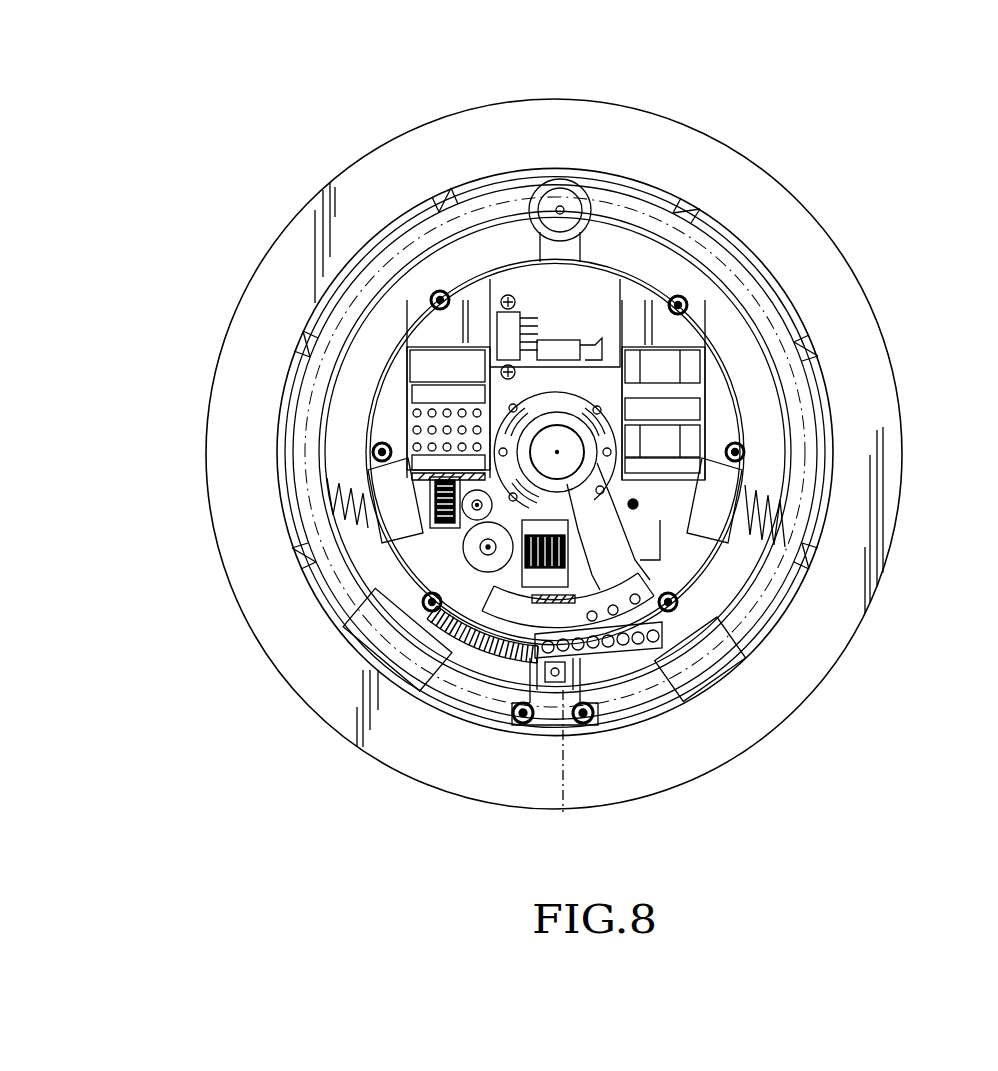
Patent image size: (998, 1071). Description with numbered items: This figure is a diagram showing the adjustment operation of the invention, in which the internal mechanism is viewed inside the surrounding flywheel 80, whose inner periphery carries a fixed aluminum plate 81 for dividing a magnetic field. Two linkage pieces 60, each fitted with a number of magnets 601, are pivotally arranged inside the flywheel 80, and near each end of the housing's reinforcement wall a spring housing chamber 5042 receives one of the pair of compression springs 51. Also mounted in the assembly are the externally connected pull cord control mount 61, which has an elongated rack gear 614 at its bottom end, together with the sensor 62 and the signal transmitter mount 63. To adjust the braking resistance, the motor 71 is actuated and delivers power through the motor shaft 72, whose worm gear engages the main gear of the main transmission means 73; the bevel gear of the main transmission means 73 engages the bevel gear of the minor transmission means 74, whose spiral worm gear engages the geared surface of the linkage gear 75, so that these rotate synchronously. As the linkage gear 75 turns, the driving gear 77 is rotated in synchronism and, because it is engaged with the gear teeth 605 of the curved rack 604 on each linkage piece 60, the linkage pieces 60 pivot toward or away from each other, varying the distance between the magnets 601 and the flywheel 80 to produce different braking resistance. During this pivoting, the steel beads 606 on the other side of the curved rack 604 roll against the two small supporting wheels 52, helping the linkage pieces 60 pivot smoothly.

The flywheel 80 is at (775, 166).
The linkage piece 60 is at (786, 295).
The magnet 601 is at (805, 408).
The compression spring 51 is at (795, 586).
The fixed aluminum plate 81 is at (312, 330).
The externally connected pull cord control mount 61 is at (690, 657).
The small supporting wheel 52 is at (563, 812).
The signal transmitter mount 63 is at (521, 320).
The sensor 62 is at (590, 340).
The motor 71 is at (405, 405).
The motor shaft 72 is at (432, 492).
The main transmission means 73 is at (451, 551).
The minor transmission means 74 is at (420, 572).
The linkage gear 75 is at (625, 660).
The driving gear 77 is at (518, 690).
The curved rack 604 is at (640, 672).
The steel bead 606 is at (590, 690).
The gear teeth 605 is at (435, 685).
The elongated rack gear 614 is at (675, 622).
The spring housing chamber 5042 is at (745, 486).